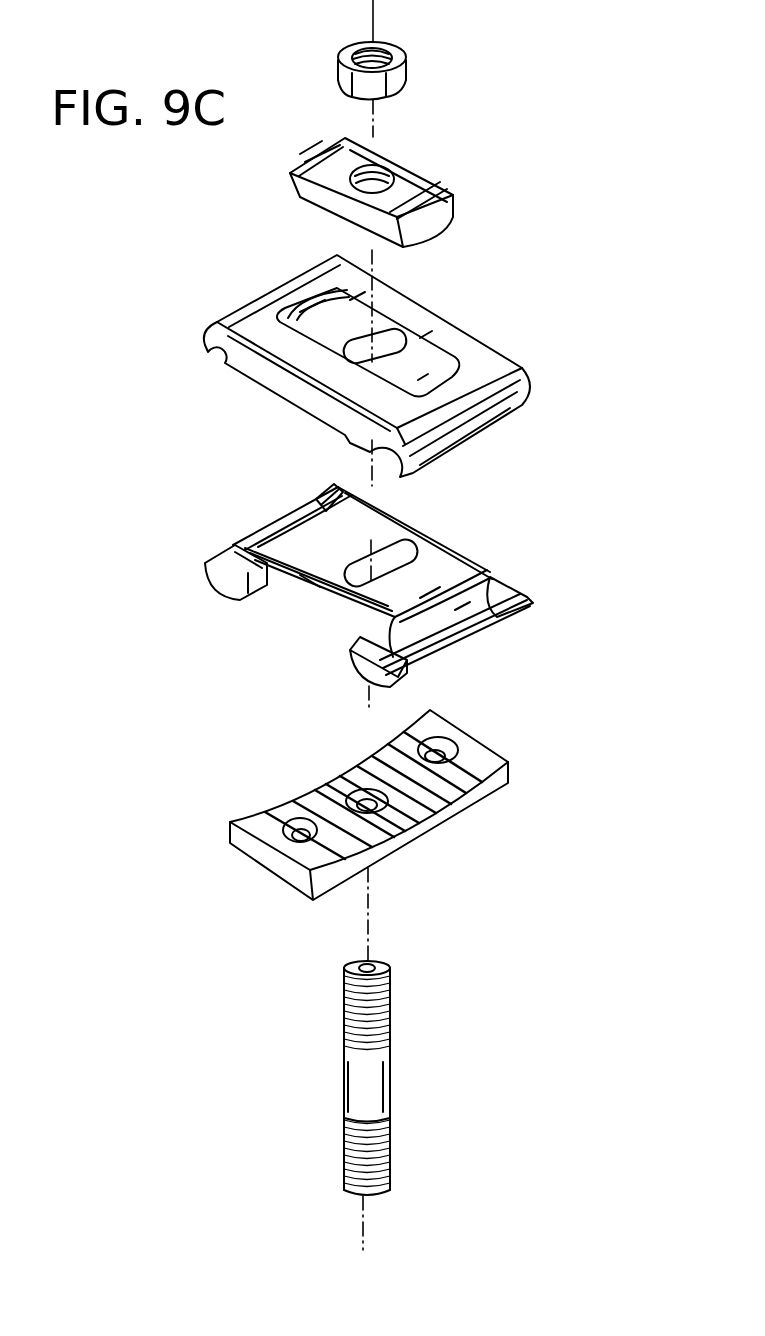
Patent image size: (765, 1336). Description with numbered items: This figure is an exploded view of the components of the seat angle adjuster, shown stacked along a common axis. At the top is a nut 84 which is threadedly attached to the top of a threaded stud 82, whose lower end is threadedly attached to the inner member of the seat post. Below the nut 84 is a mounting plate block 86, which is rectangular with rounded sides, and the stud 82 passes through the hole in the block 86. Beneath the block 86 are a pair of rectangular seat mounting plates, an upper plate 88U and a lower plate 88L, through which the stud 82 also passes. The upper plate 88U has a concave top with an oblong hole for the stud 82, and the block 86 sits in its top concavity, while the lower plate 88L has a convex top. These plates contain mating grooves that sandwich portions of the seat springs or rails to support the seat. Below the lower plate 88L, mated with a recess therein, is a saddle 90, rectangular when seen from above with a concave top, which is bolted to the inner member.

The nut 84 is at (408, 76).
The mounting plate block 86 is at (447, 200).
The upper seat mounting plate 88U is at (490, 360).
The lower seat mounting plate 88L is at (462, 567).
The saddle 90 is at (498, 782).
The threaded stud 82 is at (380, 1067).